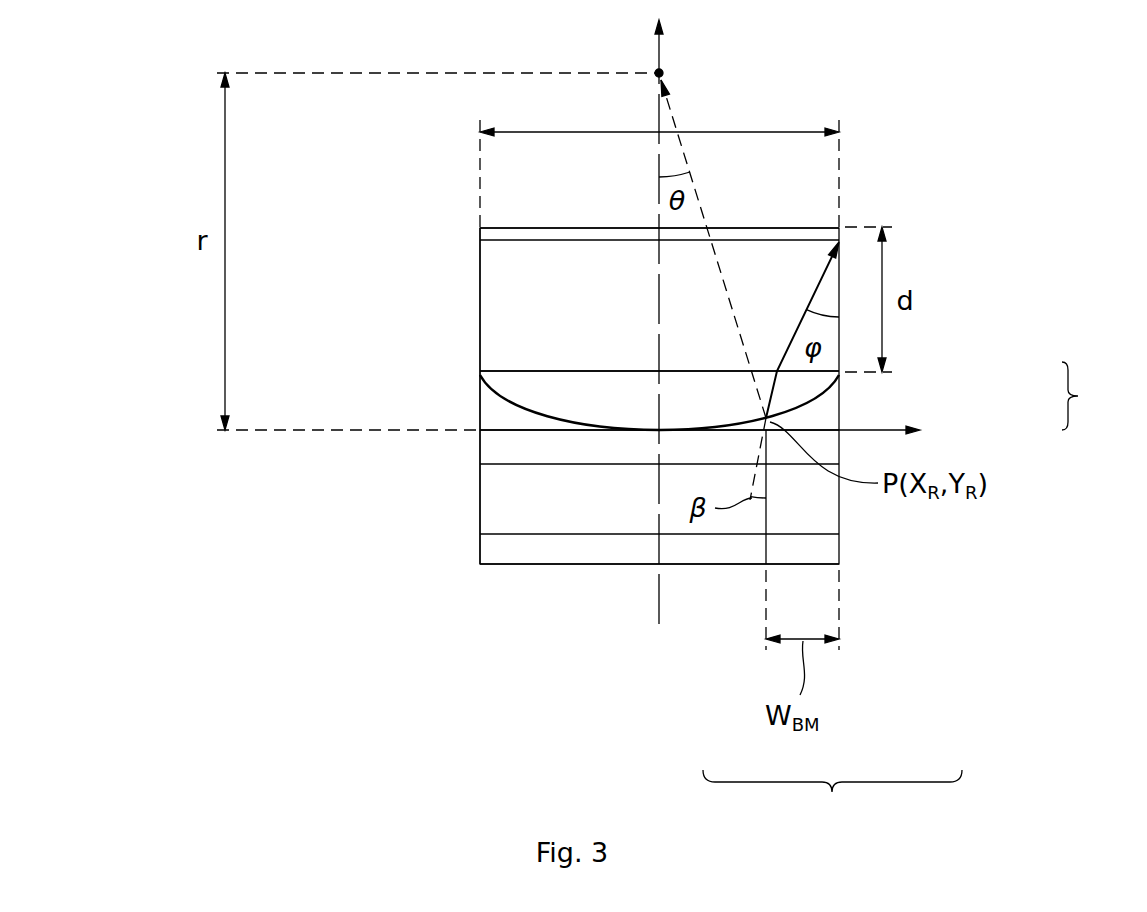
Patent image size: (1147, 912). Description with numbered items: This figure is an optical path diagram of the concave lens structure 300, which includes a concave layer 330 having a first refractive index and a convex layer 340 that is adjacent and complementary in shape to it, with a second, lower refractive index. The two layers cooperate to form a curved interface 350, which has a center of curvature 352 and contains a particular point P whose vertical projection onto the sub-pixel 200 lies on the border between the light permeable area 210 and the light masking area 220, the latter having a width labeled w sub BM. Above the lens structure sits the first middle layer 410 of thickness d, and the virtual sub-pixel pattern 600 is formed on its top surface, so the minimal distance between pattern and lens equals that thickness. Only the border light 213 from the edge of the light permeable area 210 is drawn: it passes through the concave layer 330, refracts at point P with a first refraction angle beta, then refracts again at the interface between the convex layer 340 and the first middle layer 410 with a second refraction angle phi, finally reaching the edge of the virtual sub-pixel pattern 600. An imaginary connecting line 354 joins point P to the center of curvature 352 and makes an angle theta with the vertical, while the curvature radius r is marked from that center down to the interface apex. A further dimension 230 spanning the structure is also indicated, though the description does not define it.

The center of curvature 352 is at (668, 72).
The imaginary connecting line 354 is at (720, 278).
The pixel width 230 is at (604, 131).
The virtual sub-pixel pattern 600 is at (763, 228).
The first middle layer 410 is at (480, 280).
The curved interface 350 is at (525, 408).
The convex layer 340 is at (833, 400).
The concave layer 330 is at (833, 416).
The concave lens structure 300 is at (1099, 396).
The border light 213 is at (768, 482).
The light permeable area 210 is at (710, 566).
The light masking area 220 is at (820, 566).
The sub-pixel 200 is at (832, 800).